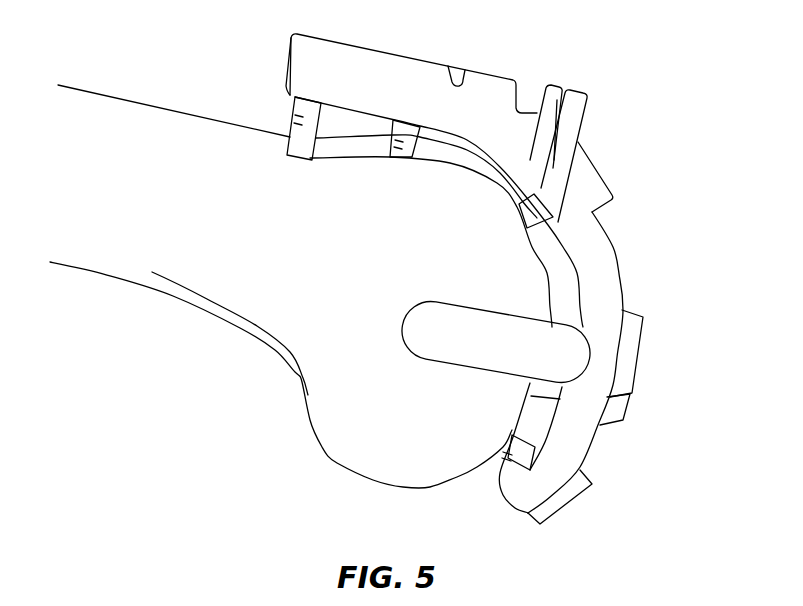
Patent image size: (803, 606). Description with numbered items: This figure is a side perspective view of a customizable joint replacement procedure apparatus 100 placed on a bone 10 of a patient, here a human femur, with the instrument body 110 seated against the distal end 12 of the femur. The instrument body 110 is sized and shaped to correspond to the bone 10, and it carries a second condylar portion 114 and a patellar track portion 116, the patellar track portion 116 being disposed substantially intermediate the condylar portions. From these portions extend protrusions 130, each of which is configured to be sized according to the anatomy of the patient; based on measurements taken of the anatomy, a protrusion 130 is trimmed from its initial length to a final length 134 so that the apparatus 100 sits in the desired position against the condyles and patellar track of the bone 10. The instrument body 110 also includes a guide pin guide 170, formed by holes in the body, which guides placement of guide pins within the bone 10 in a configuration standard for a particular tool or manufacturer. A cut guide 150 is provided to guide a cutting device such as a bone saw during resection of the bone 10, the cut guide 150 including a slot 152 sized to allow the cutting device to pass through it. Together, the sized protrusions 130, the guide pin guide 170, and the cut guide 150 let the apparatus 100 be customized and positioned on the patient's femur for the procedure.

The bone 10 is at (102, 110).
The distal end 12 is at (340, 447).
The joint replacement procedure apparatus 100 is at (648, 93).
The instrument body 110 is at (613, 253).
The second condylar portion 114 is at (500, 330).
The patellar track portion 116 is at (378, 44).
The protrusion 130 is at (293, 122).
The final length 134 is at (296, 112).
The cut guide 150 is at (587, 115).
The slot 152 is at (562, 94).
The guide pin guide 170 is at (493, 68).